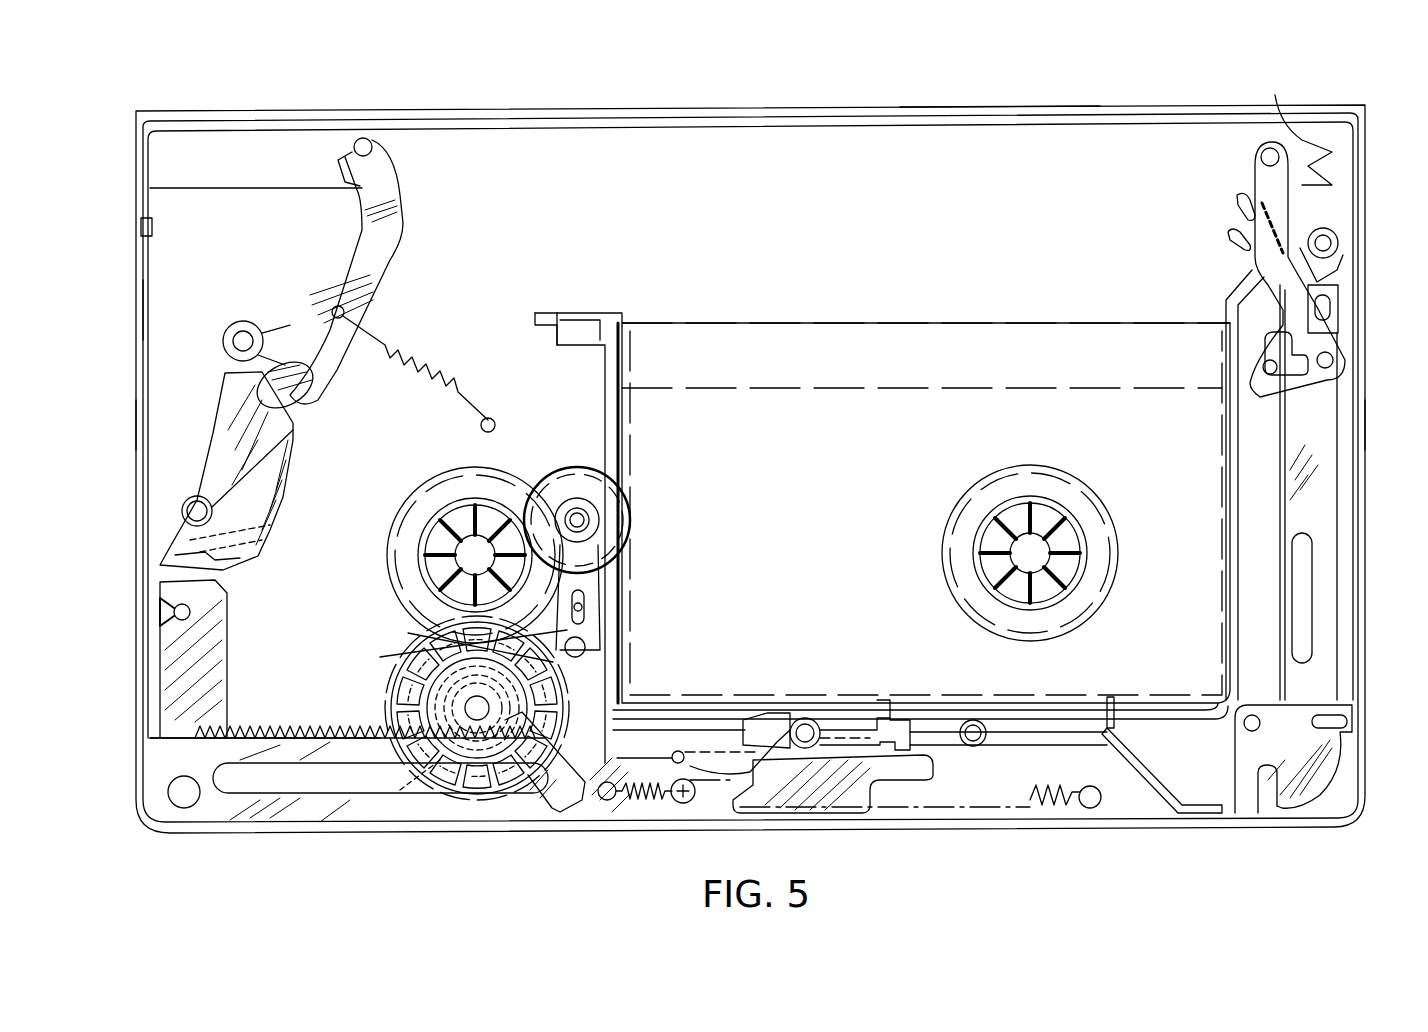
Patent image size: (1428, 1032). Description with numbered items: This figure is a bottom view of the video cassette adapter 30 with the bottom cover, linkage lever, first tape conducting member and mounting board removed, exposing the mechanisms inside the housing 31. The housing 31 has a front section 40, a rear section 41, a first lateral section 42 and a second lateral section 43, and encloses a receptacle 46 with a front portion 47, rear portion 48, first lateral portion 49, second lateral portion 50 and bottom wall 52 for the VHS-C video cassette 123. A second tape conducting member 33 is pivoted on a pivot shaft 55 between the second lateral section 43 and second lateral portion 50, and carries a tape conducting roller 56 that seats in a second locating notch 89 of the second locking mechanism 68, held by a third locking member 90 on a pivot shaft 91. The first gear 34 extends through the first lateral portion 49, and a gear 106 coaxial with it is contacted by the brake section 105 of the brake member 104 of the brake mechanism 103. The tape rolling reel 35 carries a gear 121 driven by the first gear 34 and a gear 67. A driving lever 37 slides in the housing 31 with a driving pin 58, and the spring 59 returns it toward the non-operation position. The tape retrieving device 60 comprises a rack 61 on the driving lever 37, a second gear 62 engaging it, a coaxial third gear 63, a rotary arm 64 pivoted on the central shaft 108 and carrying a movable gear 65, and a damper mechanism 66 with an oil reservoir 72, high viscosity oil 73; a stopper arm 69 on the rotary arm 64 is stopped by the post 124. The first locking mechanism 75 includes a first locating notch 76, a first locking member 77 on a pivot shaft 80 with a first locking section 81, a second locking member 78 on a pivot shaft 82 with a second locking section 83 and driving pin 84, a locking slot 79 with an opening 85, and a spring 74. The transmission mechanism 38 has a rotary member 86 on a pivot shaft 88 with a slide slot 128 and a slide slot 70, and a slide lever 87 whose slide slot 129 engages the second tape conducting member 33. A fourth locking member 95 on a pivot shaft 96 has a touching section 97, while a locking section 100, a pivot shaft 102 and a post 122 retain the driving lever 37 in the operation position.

The video cassette adapter 30 is at (128, 232).
The housing 31 is at (140, 358).
The second tape conducting member 33 is at (1240, 238).
The first gear 34 is at (641, 514).
The tape rolling reel 35 is at (446, 544).
The driving lever 37 is at (372, 810).
The transmission mechanism 38 is at (1279, 485).
The front section 40 is at (1012, 135).
The rear section 41 is at (900, 815).
The first lateral section 42 is at (158, 420).
The second lateral section 43 is at (1352, 447).
The receptacle 46 is at (1210, 465).
The front portion 47 is at (908, 342).
The rear portion 48 is at (790, 718).
The first lateral portion 49 is at (626, 450).
The second lateral portion 50 is at (1230, 578).
The bottom wall 52 is at (789, 521).
The pivot shaft 55 is at (1252, 285).
The tape conducting roller 56 is at (1260, 158).
The driving pin 58 is at (190, 613).
The spring 59 is at (1040, 810).
The tape retrieving device 60 is at (334, 622).
The rack 61 is at (294, 725).
The second gear 62 is at (445, 750).
The third gear 63 is at (390, 692).
The rotary arm 64 is at (408, 633).
The movable gear 65 is at (590, 645).
The damper mechanism 66 is at (470, 770).
The gear 67 is at (398, 540).
The second locking mechanism 68 is at (1165, 211).
The stopper arm 69 is at (545, 795).
The slide slot 70 is at (1325, 712).
The oil reservoir 72 is at (482, 760).
The high viscosity oil 73 is at (418, 820).
The spring 74 is at (440, 360).
The first locking mechanism 75 is at (358, 247).
The first locating notch 76 is at (372, 158).
The first locking member 77 is at (385, 265).
The second locking member 78 is at (282, 496).
The locking slot 79 is at (276, 538).
The pivot shaft 80 is at (235, 330).
The first locking section 81 is at (385, 135).
The pivot shaft 82 is at (190, 497).
The second locking section 83 is at (314, 392).
The driving pin 84 is at (160, 567).
The opening 85 is at (208, 570).
The rotary member 86 is at (1319, 768).
The slide lever 87 is at (1337, 555).
The pivot shaft 88 is at (1253, 712).
The second locating notch 89 is at (1299, 119).
The third locking member 90 is at (1237, 205).
The pivot shaft 91 is at (1340, 245).
The fourth locking member 95 is at (840, 730).
The pivot shaft 96 is at (807, 716).
The touching section 97 is at (872, 700).
The locking section 100 is at (757, 738).
The pivot shaft 102 is at (676, 750).
The brake mechanism 103 is at (715, 516).
The brake member 104 is at (600, 575).
The brake section 105 is at (598, 542).
The gear 106 is at (600, 510).
The central shaft 108 is at (395, 690).
The gear 121 is at (400, 572).
The post 122 is at (835, 720).
The VHS-C video cassette 123 is at (806, 322).
The post 124 is at (614, 797).
The slide slot 128 is at (1262, 800).
The slide slot 129 is at (1265, 370).